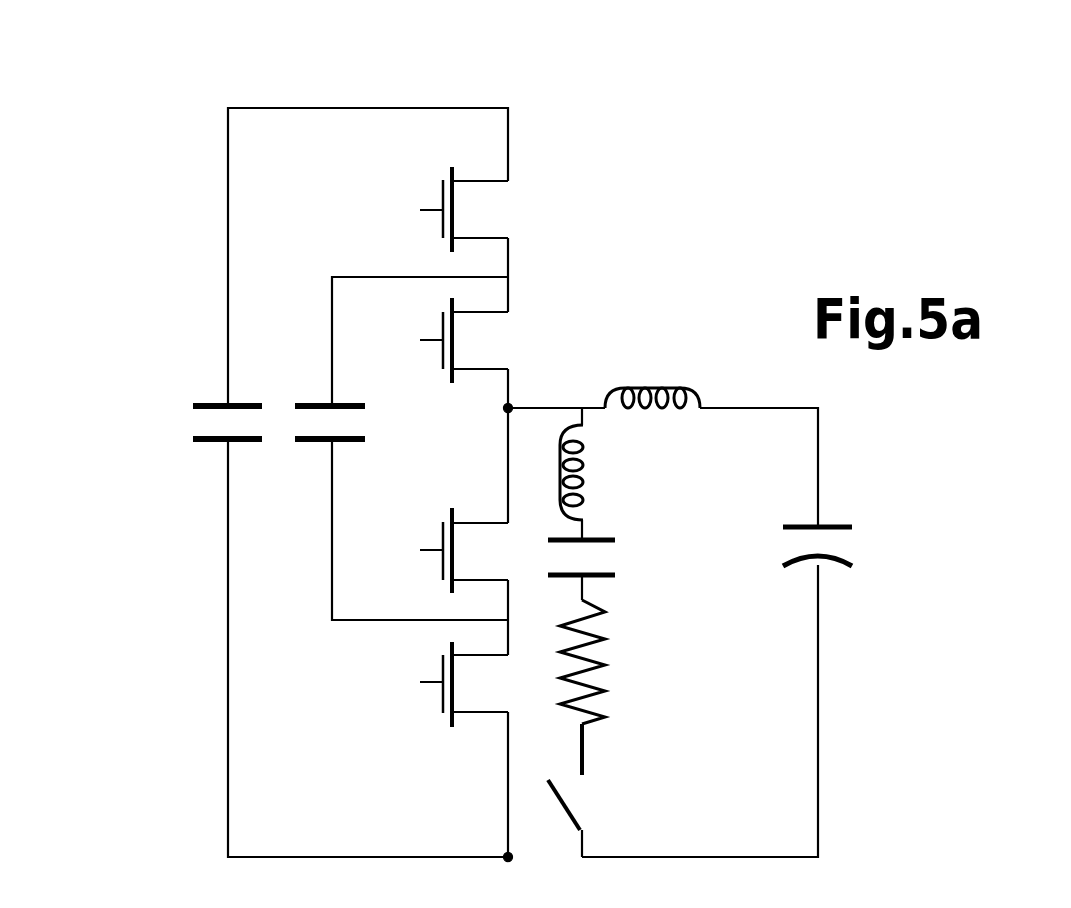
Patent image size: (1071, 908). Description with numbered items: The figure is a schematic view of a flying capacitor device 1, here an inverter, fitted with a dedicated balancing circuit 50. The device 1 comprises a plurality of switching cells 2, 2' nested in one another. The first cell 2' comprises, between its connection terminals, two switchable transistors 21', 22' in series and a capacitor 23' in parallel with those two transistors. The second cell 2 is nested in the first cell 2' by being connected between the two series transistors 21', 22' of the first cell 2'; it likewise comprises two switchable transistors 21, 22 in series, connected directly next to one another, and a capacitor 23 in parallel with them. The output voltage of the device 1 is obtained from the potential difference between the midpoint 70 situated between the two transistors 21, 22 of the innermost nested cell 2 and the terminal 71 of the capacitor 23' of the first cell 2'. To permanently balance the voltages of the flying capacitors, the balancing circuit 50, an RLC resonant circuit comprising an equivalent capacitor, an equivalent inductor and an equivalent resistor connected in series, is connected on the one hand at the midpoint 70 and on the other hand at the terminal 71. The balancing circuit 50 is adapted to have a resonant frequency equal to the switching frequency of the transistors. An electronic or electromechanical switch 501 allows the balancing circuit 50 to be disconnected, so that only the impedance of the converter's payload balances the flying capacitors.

The flying capacitor device 1 is at (697, 240).
The second switching cell 2 is at (412, 438).
The first switching cell 2' is at (368, 446).
The transistor of second cell 21 is at (430, 560).
The transistor of first cell 21' is at (422, 694).
The transistor of second cell 22 is at (452, 377).
The transistor of first cell 22' is at (426, 187).
The capacitor of second cell 23 is at (260, 367).
The capacitor of first cell 23' is at (165, 419).
The balancing circuit 50 is at (645, 695).
The switch 501 is at (620, 790).
The midpoint 70 is at (510, 406).
The terminal 71 is at (506, 854).